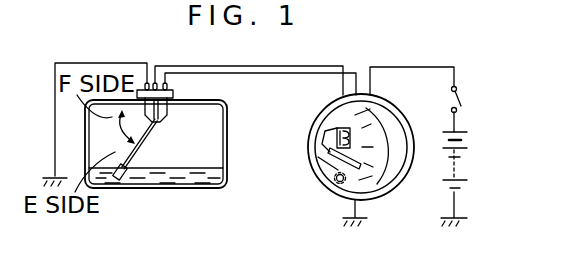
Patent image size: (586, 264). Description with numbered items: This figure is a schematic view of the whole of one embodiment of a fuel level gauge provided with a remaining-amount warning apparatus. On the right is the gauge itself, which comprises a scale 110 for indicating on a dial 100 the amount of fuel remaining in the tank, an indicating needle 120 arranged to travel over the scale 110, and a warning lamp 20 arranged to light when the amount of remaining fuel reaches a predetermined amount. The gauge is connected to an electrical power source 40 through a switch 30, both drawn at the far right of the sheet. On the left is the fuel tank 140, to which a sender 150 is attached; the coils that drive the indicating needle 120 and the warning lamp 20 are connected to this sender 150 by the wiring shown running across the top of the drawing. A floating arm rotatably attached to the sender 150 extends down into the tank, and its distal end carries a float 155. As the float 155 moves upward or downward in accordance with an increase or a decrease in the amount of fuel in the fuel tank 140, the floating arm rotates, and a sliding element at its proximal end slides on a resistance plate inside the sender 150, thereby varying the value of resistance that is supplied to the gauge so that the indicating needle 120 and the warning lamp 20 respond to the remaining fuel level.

The dial 100 is at (386, 117).
The scale 110 is at (375, 168).
The indicating needle 120 is at (322, 177).
The warning lamp 20 is at (337, 185).
The switch 30 is at (462, 101).
The electrical power source 40 is at (467, 148).
The fuel tank 140 is at (228, 160).
The sender 150 is at (170, 115).
The float 155 is at (124, 183).